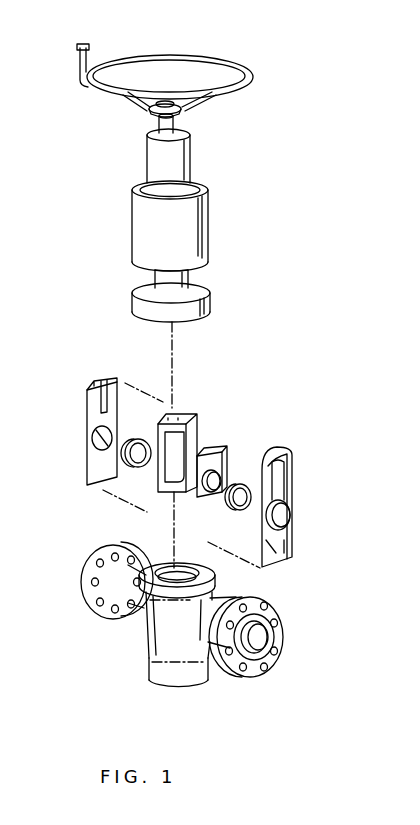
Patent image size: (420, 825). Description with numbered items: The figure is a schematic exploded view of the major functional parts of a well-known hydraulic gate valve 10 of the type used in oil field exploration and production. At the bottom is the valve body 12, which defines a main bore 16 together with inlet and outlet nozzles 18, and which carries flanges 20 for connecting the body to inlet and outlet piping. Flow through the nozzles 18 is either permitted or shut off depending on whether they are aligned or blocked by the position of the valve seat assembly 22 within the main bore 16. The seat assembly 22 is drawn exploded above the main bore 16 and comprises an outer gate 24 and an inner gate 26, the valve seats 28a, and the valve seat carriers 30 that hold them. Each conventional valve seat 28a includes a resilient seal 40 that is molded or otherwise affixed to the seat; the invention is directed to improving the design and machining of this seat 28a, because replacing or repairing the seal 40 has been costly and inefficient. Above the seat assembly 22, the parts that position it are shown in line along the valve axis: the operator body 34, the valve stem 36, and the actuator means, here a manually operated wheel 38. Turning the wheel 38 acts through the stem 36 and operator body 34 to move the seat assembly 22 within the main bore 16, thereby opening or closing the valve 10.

The gate valve 10 is at (308, 268).
The body 12 is at (142, 647).
The main bore 16 is at (172, 566).
The inlet and outlet nozzle 18 is at (220, 600).
The flange 20 is at (277, 610).
The valve seat assembly 22 is at (272, 432).
The outer gate 24 is at (193, 417).
The inner gate 26 is at (213, 444).
The valve seat 28a is at (265, 445).
The valve seat carrier 30 is at (293, 492).
The operator body 34 is at (208, 218).
The valve stem 36 is at (175, 122).
The wheel 38 is at (253, 72).
The resilient seal 40 is at (236, 513).